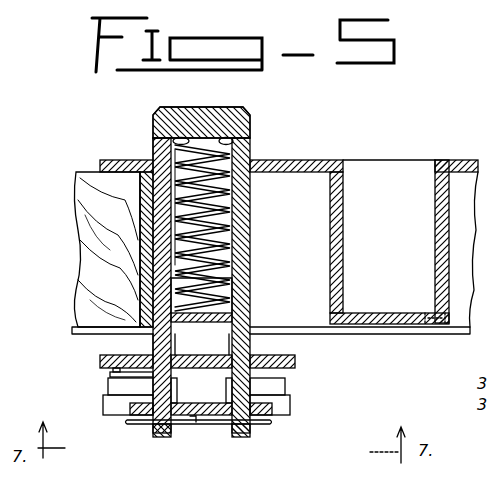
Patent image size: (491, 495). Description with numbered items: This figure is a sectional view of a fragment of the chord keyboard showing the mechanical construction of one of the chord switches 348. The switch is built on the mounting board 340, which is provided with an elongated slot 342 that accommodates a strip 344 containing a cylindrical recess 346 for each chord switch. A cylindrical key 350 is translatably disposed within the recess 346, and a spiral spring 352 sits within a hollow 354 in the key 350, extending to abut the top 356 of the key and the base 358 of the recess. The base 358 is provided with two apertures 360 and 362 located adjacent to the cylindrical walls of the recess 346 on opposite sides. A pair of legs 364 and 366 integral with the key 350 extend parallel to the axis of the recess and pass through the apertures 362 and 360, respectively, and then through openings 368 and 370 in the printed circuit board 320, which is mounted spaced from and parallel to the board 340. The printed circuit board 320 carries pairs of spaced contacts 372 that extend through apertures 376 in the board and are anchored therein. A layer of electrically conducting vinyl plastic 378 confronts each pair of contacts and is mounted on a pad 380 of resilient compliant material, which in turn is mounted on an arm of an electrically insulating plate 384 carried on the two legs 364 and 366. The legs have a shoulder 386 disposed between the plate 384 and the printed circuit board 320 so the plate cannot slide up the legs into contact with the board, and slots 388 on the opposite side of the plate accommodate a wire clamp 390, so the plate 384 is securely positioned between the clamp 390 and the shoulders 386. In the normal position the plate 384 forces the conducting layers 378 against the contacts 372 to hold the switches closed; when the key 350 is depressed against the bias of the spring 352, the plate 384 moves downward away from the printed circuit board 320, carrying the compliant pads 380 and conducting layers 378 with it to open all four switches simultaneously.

The printed circuit board 320 is at (302, 362).
The mounting board 340 is at (97, 232).
The elongated slot 342 is at (140, 202).
The strip 344 is at (280, 162).
The cylindrical recess 346 is at (345, 218).
The chord switch 348 is at (150, 122).
The cylindrical key 350 is at (214, 112).
The spiral spring 352 is at (170, 141).
The hollow 354 is at (252, 150).
The top of the key 356 is at (176, 108).
The base of the recess 358 is at (378, 324).
The aperture 360 is at (350, 314).
The aperture 362 is at (428, 312).
The leg 364 is at (146, 292).
The leg 366 is at (252, 292).
The opening 368 is at (153, 345).
The opening 370 is at (256, 347).
The contact 372 is at (112, 375).
The aperture 376 is at (100, 360).
The layer of electrically conducting vinyl plastic 378 is at (125, 392).
The pad of resilient compliant material 380 is at (127, 412).
The electrically insulating plate 384 is at (209, 426).
The shoulder 386 is at (175, 405).
The slot 388 is at (156, 430).
The wire clamp 390 is at (192, 424).